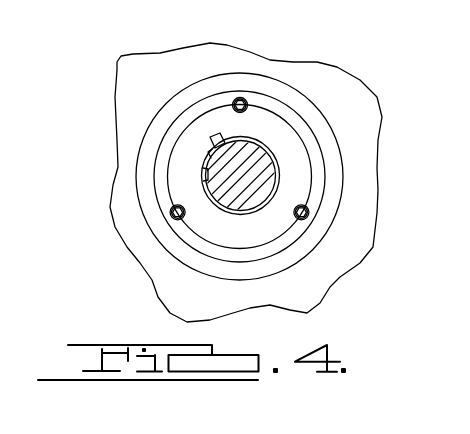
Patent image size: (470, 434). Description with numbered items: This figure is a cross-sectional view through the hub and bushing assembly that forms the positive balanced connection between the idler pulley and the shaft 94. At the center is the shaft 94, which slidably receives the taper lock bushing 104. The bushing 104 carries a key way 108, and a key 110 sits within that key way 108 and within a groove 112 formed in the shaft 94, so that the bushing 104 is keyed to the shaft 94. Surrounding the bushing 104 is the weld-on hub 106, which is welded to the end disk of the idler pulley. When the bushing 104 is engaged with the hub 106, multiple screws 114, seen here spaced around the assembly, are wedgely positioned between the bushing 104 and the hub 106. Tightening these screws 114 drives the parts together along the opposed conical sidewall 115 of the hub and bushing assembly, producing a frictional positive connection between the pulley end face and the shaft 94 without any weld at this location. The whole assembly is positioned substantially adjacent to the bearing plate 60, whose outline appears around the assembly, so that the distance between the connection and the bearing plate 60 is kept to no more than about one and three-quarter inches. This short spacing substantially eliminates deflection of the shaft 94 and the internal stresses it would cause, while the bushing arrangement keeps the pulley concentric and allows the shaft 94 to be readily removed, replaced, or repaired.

The bearing plate 60 is at (370, 131).
The shaft 94 is at (263, 185).
The taper lock bushing 104 is at (207, 222).
The weld-on hub 106 is at (325, 220).
The key way 108 is at (215, 137).
The key 110 is at (216, 138).
The groove 112 is at (208, 152).
The screws 114 is at (238, 97).
The opposed conical sidewall 115 is at (297, 238).